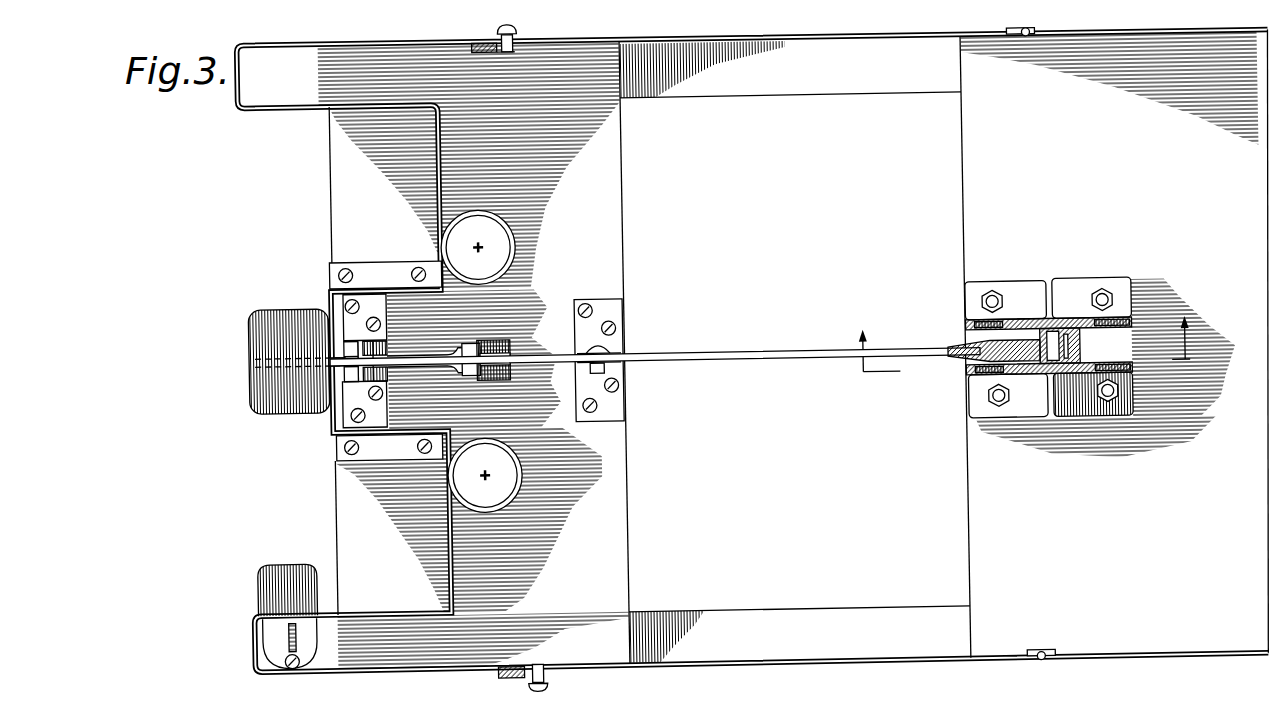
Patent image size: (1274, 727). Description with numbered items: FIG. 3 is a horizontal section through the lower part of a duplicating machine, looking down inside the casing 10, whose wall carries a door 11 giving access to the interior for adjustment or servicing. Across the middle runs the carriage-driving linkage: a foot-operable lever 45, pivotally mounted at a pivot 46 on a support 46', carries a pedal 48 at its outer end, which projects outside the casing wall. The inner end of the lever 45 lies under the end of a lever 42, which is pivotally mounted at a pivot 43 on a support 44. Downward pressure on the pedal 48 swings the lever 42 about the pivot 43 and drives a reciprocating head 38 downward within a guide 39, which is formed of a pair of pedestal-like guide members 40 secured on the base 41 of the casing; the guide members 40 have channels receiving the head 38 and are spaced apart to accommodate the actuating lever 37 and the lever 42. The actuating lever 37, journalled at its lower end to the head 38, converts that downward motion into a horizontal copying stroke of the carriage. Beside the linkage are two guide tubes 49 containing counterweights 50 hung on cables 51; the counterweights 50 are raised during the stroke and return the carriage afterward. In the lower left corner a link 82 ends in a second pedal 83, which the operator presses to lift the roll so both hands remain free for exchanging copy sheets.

The casing 10 is at (474, 692).
The door 11 is at (749, 31).
The actuating lever 37 is at (1080, 352).
The reciprocating head 38 is at (1065, 328).
The guide 39 is at (1040, 353).
The guide members 40 is at (1025, 321).
The base 41 is at (1104, 624).
The lever 42 is at (712, 348).
The pivot 43 is at (587, 374).
The support 44 is at (623, 369).
The foot-operable lever 45 is at (418, 345).
The pivot 46 is at (342, 365).
The support 46' is at (387, 371).
The pedal 48 is at (292, 312).
The guide tubes 49 is at (466, 276).
The counterweights 50 is at (484, 216).
The cables 51 is at (484, 239).
The link 82 is at (284, 658).
The pedal 83 is at (289, 566).